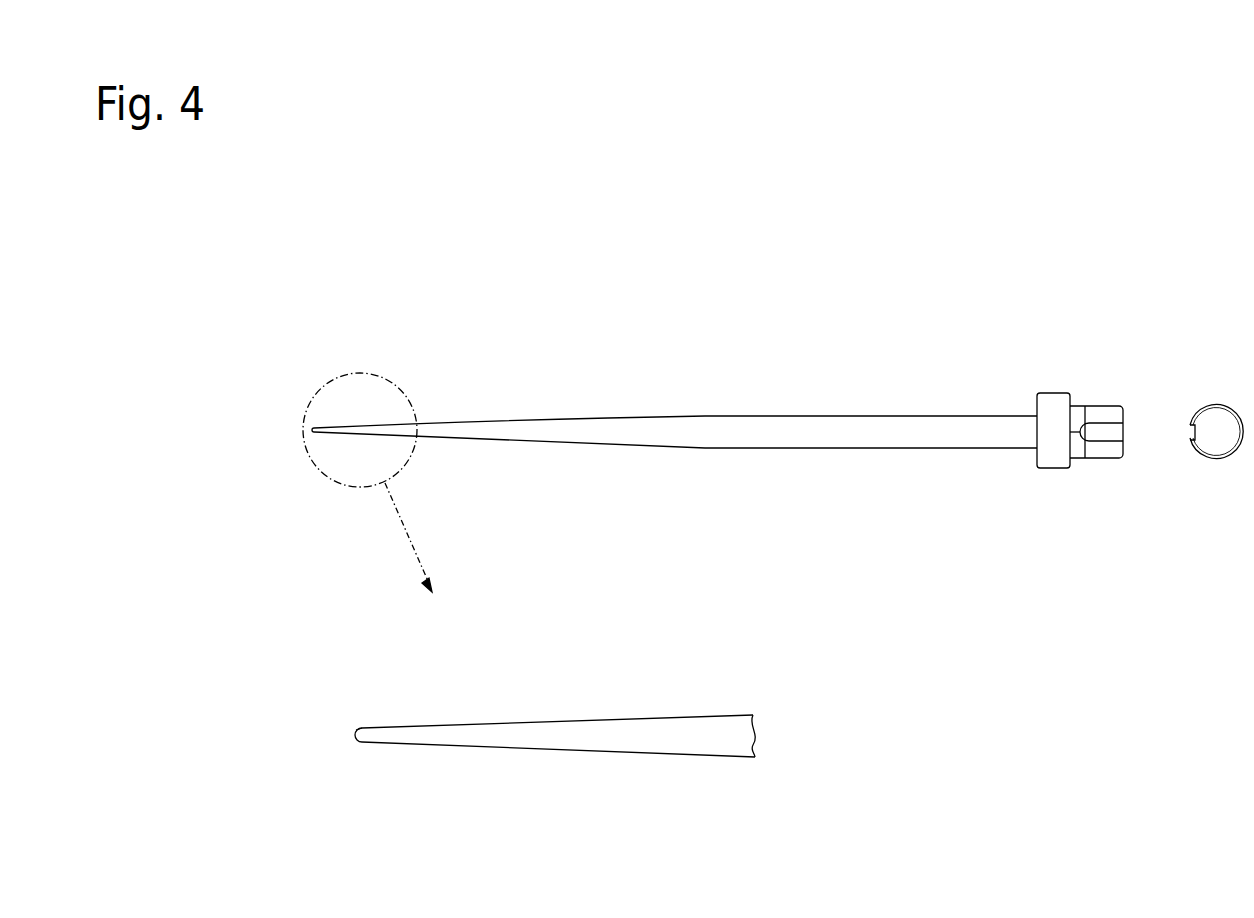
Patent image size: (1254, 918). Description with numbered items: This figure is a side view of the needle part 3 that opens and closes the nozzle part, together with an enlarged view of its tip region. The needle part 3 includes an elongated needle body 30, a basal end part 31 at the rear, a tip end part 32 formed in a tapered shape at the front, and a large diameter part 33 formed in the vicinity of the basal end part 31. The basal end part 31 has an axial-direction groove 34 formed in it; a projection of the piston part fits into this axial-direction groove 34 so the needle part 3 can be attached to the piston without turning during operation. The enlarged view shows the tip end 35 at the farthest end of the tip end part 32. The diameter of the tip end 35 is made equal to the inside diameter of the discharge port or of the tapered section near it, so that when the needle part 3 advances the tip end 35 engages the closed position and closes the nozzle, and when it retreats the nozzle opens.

The needle part 3 is at (750, 401).
The needle body 30 is at (732, 450).
The basal end part 31 is at (1130, 415).
The tip end part 32 is at (392, 375).
The large diameter part 33 is at (1055, 472).
The axial-direction groove 34 is at (1107, 436).
The tip end 35 is at (362, 727).